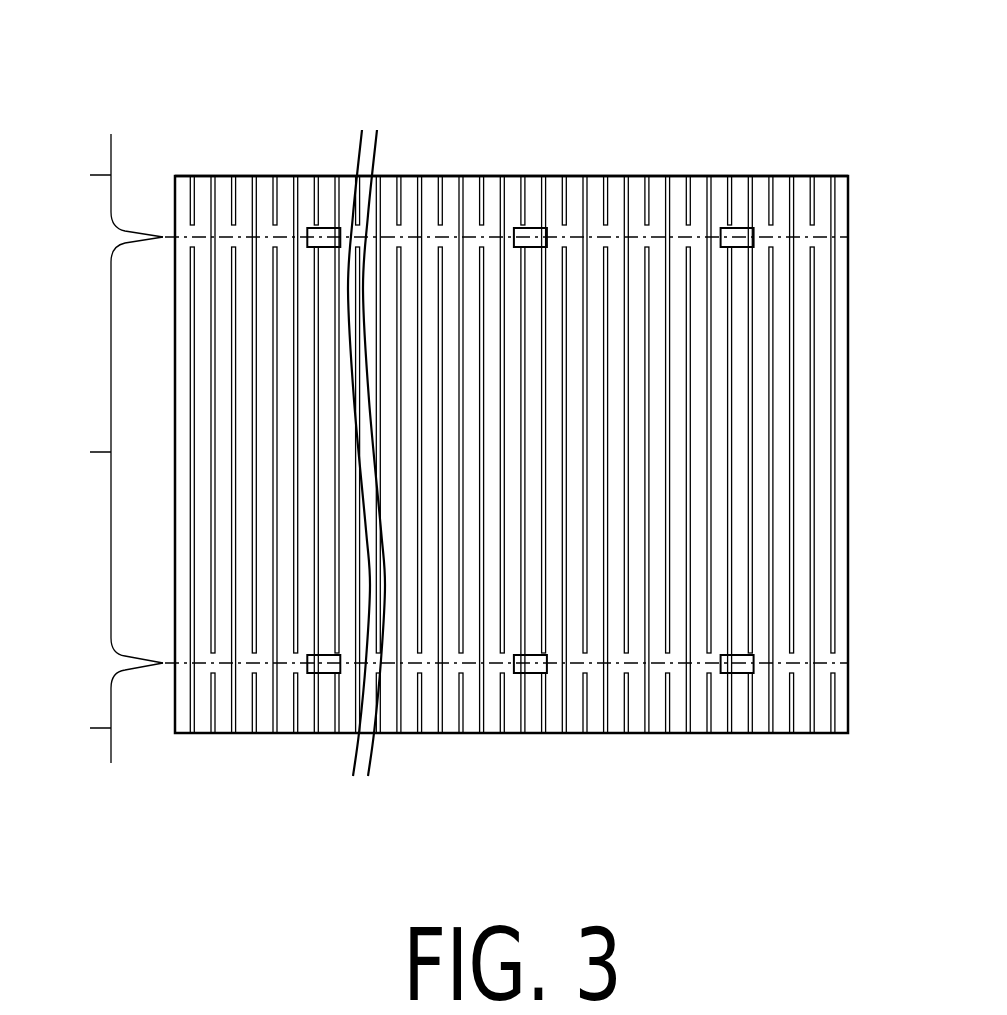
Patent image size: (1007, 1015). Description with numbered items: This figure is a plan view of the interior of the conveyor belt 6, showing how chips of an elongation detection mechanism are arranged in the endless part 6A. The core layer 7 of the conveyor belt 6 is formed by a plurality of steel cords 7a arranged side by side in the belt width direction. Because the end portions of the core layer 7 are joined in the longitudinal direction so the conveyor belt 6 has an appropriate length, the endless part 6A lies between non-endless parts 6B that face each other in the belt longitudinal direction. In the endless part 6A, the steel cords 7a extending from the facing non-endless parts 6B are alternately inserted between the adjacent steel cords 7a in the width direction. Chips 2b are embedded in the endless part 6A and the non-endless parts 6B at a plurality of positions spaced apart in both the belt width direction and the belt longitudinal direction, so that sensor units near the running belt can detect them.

The conveyor belt 6 is at (759, 127).
The endless part 6A is at (103, 450).
The non-endless part 6B is at (103, 448).
The core layer 7 is at (627, 147).
The steel cords 7a is at (437, 715).
The chips 2b is at (332, 230).